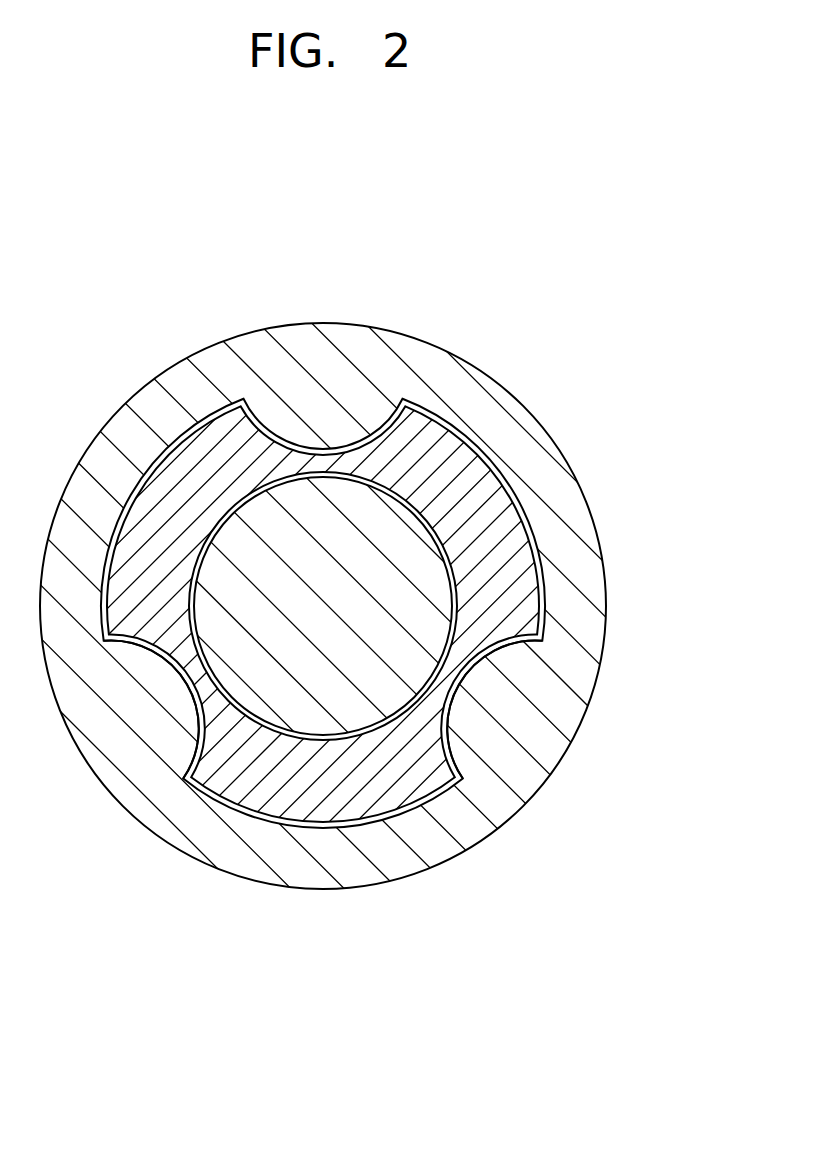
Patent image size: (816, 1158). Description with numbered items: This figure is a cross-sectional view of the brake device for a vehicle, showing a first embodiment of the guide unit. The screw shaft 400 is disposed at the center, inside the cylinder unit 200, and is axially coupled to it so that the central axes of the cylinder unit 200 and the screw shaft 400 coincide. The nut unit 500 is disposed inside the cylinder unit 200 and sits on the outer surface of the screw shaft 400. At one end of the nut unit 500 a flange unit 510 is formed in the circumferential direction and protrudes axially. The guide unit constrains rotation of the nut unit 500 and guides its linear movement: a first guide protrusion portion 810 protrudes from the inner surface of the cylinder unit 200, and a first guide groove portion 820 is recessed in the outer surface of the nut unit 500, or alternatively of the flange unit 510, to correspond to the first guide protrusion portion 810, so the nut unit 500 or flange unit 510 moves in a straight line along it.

The cylinder unit 200 is at (582, 488).
The screw shaft 400 is at (250, 560).
The nut unit 500 is at (432, 470).
The flange unit 510 is at (323, 614).
The first guide protrusion portion 810 is at (482, 693).
The first guide groove portion 820 is at (202, 700).